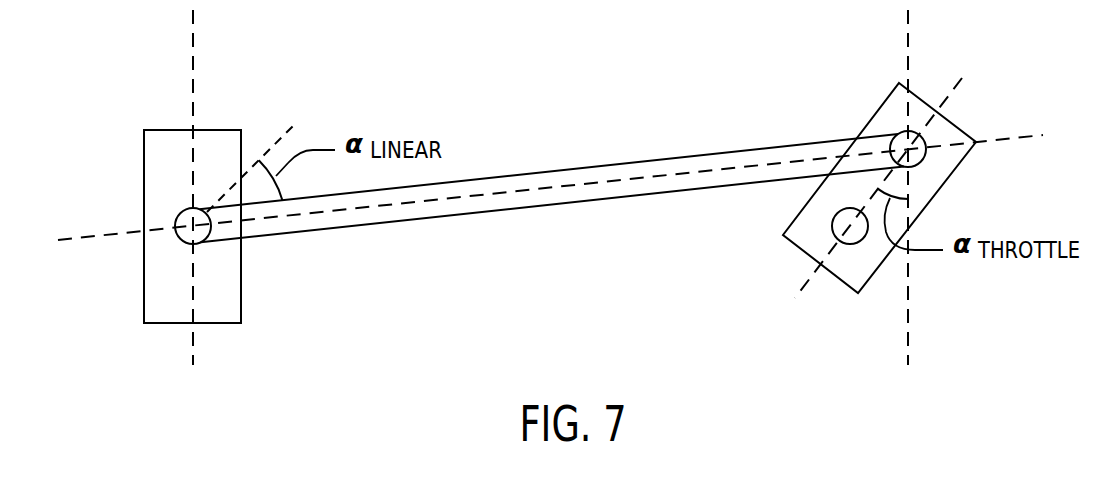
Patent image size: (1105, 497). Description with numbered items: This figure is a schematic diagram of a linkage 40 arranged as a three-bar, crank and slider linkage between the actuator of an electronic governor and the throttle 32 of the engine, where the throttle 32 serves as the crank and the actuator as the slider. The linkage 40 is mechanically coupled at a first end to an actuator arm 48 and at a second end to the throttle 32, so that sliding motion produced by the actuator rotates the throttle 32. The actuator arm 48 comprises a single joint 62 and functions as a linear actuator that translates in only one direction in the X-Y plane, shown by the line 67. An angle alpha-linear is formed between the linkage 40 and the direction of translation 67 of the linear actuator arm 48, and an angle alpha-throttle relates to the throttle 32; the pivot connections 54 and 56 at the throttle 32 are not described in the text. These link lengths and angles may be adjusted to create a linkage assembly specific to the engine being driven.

The actuator arm 48 is at (168, 130).
The direction of translation 67 is at (277, 143).
The single joint 62 is at (180, 242).
The linkage 40 is at (555, 188).
The throttle 32 is at (957, 125).
The link pivot 54 is at (942, 176).
The throttle pivot 56 is at (833, 275).